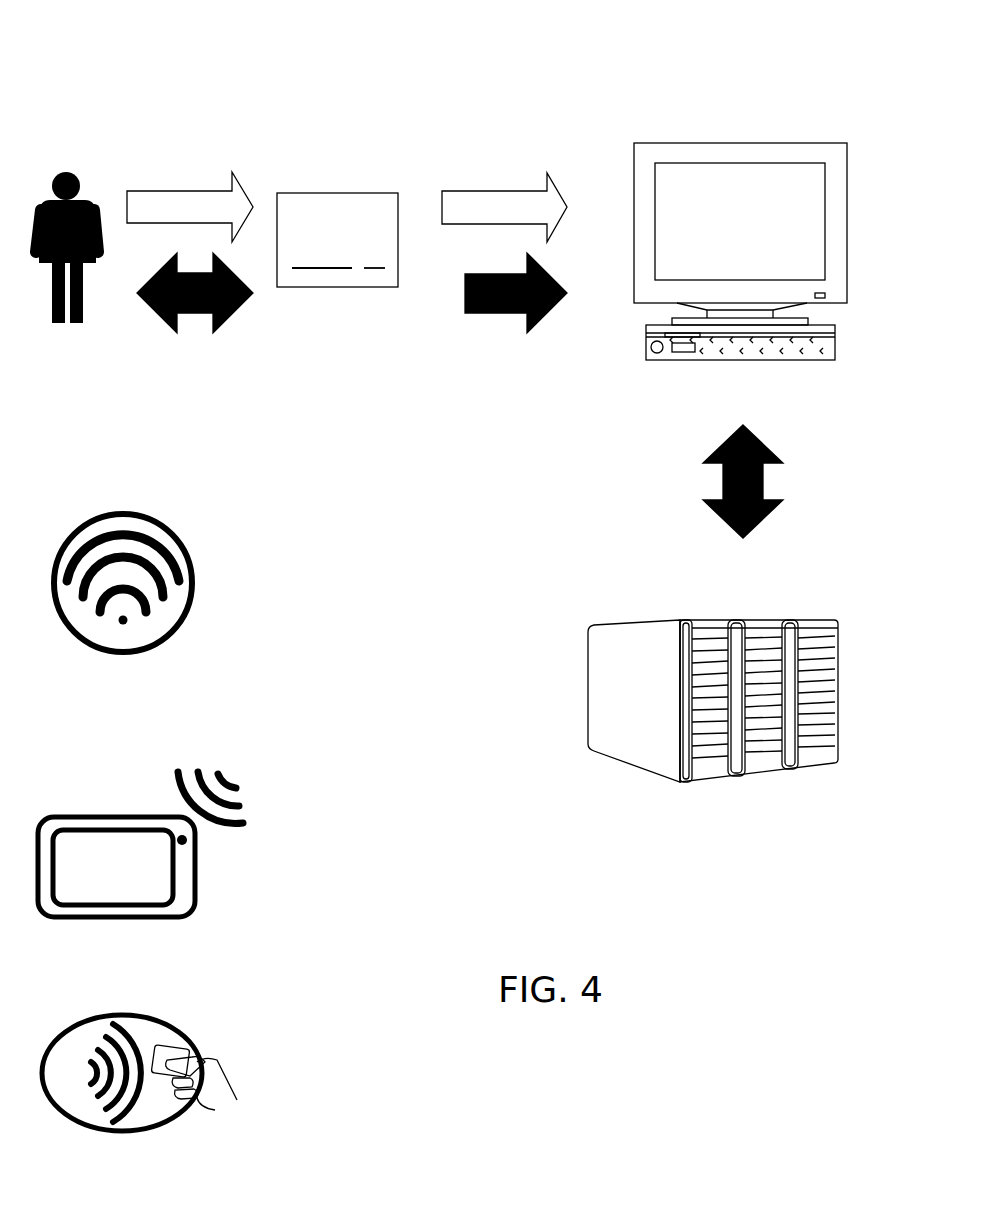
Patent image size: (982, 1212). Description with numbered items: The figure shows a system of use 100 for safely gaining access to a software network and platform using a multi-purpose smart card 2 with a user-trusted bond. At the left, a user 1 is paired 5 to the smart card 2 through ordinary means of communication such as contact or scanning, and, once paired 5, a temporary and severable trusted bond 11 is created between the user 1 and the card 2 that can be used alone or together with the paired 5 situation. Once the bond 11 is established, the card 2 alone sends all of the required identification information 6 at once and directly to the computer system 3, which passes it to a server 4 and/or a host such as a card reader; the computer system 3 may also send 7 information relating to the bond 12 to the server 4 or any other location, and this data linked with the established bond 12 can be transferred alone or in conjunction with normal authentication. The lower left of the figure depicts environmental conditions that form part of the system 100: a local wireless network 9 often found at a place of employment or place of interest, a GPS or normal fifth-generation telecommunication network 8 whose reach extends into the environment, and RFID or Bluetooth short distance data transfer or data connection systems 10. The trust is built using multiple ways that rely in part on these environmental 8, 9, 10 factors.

The system of use 100 is at (600, 78).
The user 1 is at (66, 171).
The multi-purpose smart card 2 is at (313, 192).
The computer system 3 is at (708, 142).
The server 4 is at (800, 619).
The pairing 5 is at (190, 314).
The information transfer 6 is at (497, 314).
The bond information transfer 7 is at (723, 478).
The GPS or 5G telecommunication network 8 is at (196, 878).
The local wireless network 9 is at (167, 525).
The short distance data transfer system 10 is at (192, 1035).
The trusted bond 11 is at (180, 190).
The bond-linked data 12 is at (483, 190).